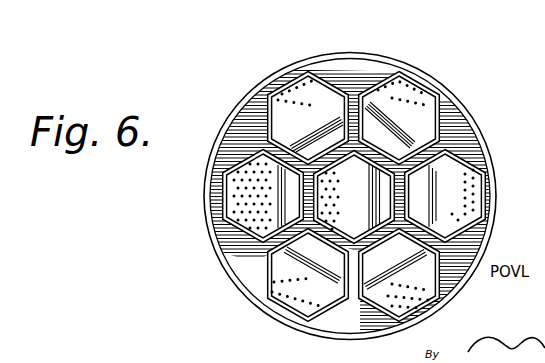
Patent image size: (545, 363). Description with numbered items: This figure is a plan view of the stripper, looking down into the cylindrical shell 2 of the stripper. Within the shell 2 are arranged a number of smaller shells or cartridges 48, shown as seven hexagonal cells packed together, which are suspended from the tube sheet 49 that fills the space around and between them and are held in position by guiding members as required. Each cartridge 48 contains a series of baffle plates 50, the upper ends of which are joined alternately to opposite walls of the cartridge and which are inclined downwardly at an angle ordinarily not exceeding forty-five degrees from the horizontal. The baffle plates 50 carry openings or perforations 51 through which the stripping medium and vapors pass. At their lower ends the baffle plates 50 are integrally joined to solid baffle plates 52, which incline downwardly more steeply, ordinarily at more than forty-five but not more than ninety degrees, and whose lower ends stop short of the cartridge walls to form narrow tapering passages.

The shell 2 is at (468, 112).
The cartridges 48 is at (428, 86).
The tube sheet 49 is at (370, 68).
The baffle plates 50 is at (322, 90).
The perforations 51 is at (297, 76).
The solid baffle plates 52 is at (337, 117).